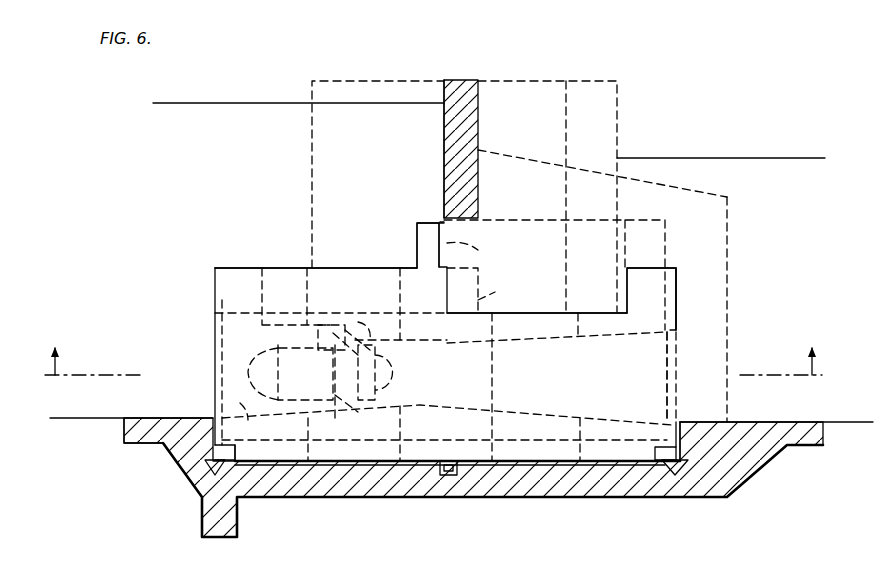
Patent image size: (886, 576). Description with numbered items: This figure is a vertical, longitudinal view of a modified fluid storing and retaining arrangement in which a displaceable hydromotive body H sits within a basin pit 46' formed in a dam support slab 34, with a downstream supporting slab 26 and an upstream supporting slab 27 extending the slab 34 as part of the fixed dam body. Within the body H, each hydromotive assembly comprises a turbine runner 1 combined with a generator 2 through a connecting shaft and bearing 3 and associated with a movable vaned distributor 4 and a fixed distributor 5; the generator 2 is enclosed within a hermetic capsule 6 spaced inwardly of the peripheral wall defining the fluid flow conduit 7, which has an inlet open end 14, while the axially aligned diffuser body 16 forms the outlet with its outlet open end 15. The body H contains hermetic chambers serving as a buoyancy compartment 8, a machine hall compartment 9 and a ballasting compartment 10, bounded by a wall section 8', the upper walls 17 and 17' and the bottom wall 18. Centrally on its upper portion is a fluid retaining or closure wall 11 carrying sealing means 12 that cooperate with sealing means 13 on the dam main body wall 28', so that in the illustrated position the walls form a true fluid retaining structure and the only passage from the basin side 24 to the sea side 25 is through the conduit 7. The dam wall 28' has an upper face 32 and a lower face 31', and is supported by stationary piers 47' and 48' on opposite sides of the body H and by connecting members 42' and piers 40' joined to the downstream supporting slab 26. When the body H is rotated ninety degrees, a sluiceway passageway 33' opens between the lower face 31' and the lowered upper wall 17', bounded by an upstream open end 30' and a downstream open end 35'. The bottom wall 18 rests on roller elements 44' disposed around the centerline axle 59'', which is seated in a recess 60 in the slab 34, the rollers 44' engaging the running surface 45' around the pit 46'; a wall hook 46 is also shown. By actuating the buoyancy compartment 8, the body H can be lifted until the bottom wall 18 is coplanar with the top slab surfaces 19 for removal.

The turbine runner 1 is at (375, 372).
The generator 2 is at (305, 372).
The connecting shaft and bearing 3 is at (345, 375).
The movable vaned distributor 4 is at (357, 333).
The fixed distributor 5 is at (331, 337).
The hermetic capsule 6 is at (272, 356).
The fluid flow conduit 7 is at (427, 381).
The buoyancy compartment 8 is at (443, 364).
The wall section 8' is at (651, 299).
The machine hall compartment 9 is at (354, 349).
The ballasting compartment 10 is at (444, 433).
The fluid retaining or closure wall 11 is at (419, 250).
The sealing means 12 is at (438, 222).
The sealing means 13 is at (443, 215).
The inlet open end 14 is at (215, 352).
The outlet open end 15 is at (672, 372).
The diffuser body 16 is at (557, 352).
The upper wall 17 is at (316, 248).
The upper wall 17' is at (537, 289).
The bottom wall 18 is at (478, 464).
The top slab surfaces 19 is at (150, 418).
The basin side 24 is at (240, 101).
The sea side 25 is at (767, 156).
The downstream supporting slab 26 is at (712, 441).
The upstream supporting slab 27 is at (160, 434).
The dam main body wall 28' is at (459, 149).
The upstream open end 30' is at (483, 252).
The lower face 31' is at (554, 275).
The upper face 32 is at (470, 80).
The passageway 33' is at (462, 289).
The dam support slab 34 is at (473, 477).
The downstream open end 35' is at (500, 292).
The piers 40' is at (706, 309).
The connecting members 42' is at (602, 173).
The roller elements 44' is at (440, 492).
The running surface 45' is at (436, 491).
The wall hook 46 is at (202, 418).
The basin pit 46' is at (281, 483).
The stationary piers 47' is at (378, 174).
The stationary piers 48' is at (547, 196).
The centerline axle 59'' is at (467, 498).
The recess 60 is at (441, 476).
The hydromotive body H is at (680, 290).